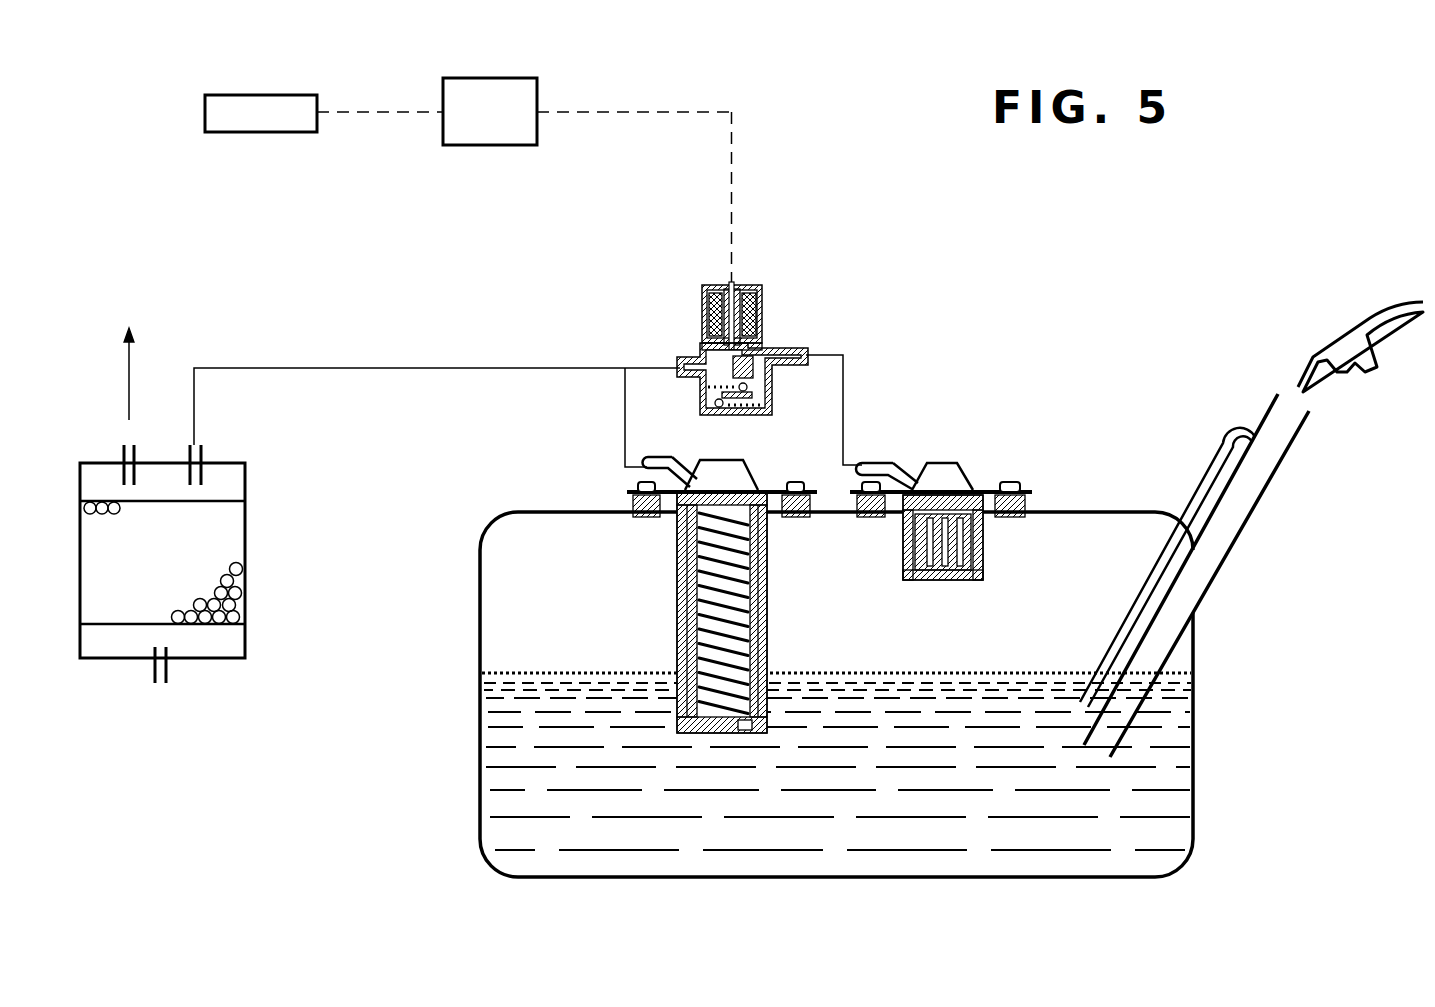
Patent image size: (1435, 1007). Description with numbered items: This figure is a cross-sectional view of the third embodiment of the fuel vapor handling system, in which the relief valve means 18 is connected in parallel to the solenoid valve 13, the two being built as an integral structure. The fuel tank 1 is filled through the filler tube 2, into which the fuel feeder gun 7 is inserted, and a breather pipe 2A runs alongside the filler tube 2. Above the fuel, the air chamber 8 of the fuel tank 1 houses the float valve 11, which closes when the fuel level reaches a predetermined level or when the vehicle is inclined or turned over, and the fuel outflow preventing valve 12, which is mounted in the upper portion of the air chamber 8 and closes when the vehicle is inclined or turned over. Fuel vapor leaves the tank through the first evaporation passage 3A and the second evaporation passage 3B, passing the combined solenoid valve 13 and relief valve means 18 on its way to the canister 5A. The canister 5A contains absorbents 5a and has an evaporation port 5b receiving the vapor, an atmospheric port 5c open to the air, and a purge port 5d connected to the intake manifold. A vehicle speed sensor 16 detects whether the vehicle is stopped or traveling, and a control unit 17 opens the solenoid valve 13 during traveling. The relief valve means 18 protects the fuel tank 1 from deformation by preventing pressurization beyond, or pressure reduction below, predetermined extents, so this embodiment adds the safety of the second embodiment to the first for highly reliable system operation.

The fuel tank 1 is at (1045, 512).
The filler tube 2 is at (1238, 520).
The breather pipe 2A is at (1192, 498).
The first evaporation passage 3A is at (405, 368).
The second evaporation passage 3B is at (843, 388).
The canister 5A is at (247, 513).
The absorbents 5a is at (225, 583).
The evaporation port 5b is at (203, 455).
The atmospheric port 5c is at (170, 672).
The purge port 5d is at (120, 453).
The fuel feeder gun 7 is at (1328, 347).
The air chamber 8 is at (848, 614).
The float valve 11 is at (673, 575).
The fuel outflow preventing valve 12 is at (983, 563).
The solenoid valve 13 is at (700, 309).
The vehicle speed sensor 16 is at (288, 132).
The control unit 17 is at (510, 145).
The relief valve means 18 is at (738, 418).